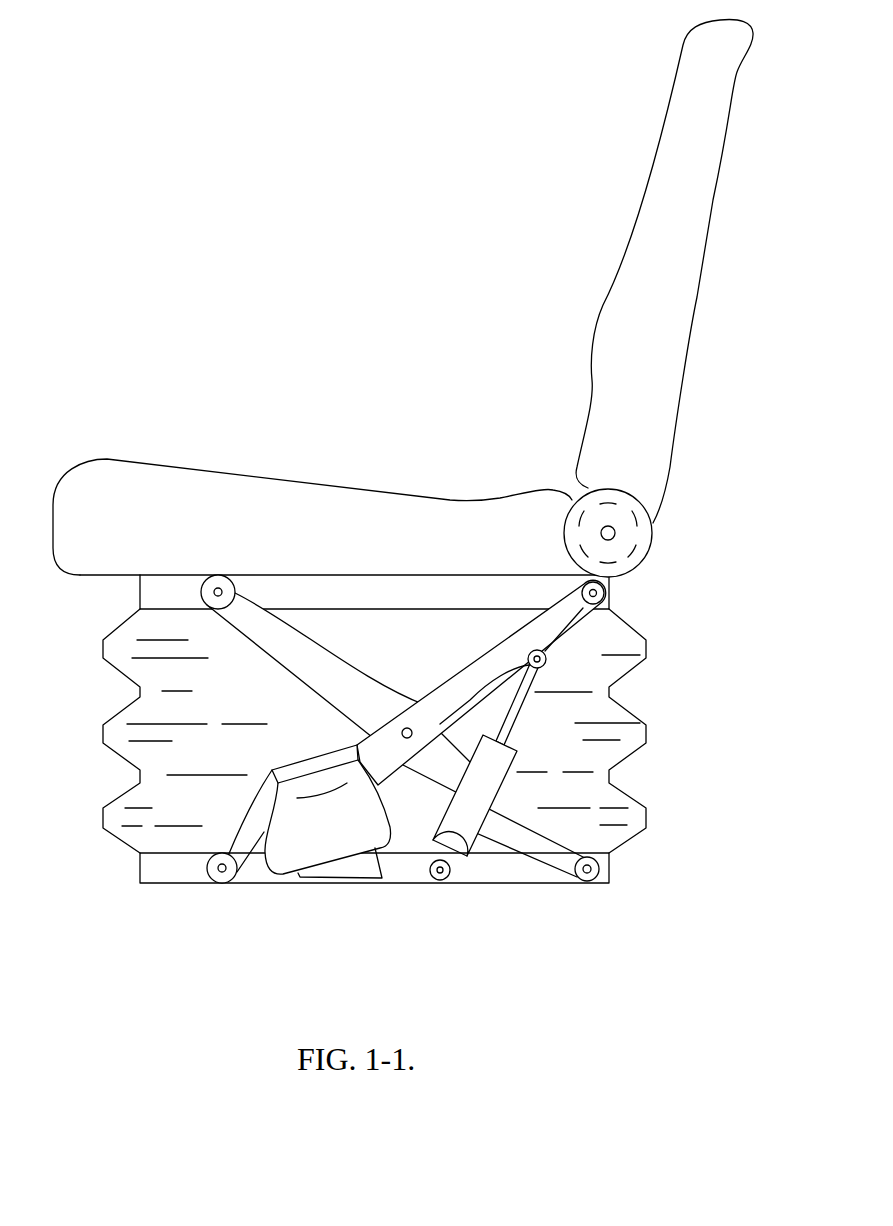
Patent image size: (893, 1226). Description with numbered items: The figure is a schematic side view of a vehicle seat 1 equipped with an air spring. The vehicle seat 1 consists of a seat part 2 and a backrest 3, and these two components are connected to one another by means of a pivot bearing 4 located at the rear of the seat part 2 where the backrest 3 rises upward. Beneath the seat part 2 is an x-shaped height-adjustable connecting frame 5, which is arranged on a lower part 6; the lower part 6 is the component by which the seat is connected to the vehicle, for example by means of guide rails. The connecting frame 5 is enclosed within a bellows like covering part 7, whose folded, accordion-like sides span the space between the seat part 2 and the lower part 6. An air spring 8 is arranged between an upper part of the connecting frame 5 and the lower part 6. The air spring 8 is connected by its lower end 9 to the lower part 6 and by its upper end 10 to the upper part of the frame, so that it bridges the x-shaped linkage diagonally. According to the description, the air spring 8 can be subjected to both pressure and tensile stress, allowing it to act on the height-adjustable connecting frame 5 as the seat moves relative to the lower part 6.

The vehicle seat 1 is at (331, 258).
The seat part 2 is at (315, 512).
The backrest 3 is at (658, 235).
The pivot bearing 4 is at (641, 545).
The x-shaped height-adjustable connecting frame 5 is at (355, 692).
The lower part 6 is at (398, 867).
The bellows like covering part 7 is at (635, 817).
The air spring 8 is at (467, 833).
The lower end 9 is at (440, 881).
The upper end 10 is at (547, 660).